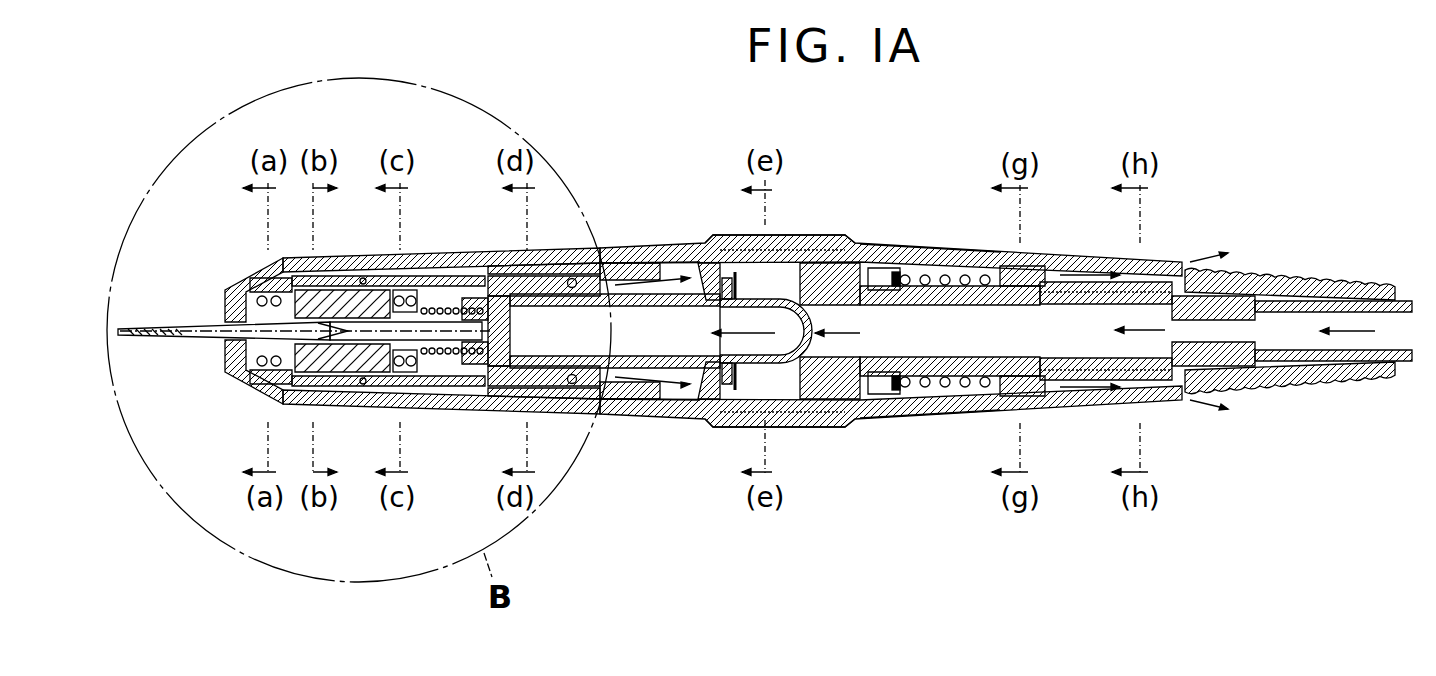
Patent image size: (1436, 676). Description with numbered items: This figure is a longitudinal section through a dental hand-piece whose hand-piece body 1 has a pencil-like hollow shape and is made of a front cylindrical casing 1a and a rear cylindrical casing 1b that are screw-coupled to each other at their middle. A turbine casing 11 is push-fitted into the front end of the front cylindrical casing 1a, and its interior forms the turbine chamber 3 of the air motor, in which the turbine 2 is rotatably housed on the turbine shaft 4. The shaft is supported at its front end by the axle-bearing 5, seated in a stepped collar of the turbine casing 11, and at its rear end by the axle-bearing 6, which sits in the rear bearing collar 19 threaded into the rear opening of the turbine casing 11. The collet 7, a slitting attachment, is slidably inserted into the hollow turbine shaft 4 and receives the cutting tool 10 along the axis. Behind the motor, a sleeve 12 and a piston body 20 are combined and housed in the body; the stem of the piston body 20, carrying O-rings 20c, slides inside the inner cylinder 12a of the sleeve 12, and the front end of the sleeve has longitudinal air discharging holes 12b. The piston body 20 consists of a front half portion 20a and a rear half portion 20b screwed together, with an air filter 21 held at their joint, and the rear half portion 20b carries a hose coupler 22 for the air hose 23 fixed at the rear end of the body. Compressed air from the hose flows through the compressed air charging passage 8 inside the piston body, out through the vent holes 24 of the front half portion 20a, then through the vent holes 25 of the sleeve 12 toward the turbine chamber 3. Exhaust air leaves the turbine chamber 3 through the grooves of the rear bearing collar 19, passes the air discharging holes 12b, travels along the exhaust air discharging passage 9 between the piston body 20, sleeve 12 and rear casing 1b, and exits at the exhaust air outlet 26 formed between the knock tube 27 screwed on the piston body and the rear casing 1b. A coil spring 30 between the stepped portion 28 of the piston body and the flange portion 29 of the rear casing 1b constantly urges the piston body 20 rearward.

The hand-piece body 1 is at (790, 233).
The front cylindrical casing 1a is at (667, 248).
The rear cylindrical casing 1b is at (888, 246).
The turbine 2 is at (340, 372).
The turbine chamber 3 is at (380, 265).
The turbine shaft 4 is at (270, 392).
The axle-bearing 5 is at (268, 380).
The axle-bearing 6 is at (407, 395).
The collet 7 is at (308, 268).
The compressed air charging passage 8 is at (650, 344).
The exhaust air discharging passage 9 is at (1022, 273).
The cutting tool 10 is at (160, 323).
The turbine casing 11 is at (345, 275).
The sleeve 12 is at (590, 398).
The inner cylinder of the sleeve 12a is at (596, 268).
The air discharging holes 12b is at (580, 270).
The rear bearing collar 19 is at (455, 300).
The piston body 20 is at (650, 400).
The front half portion of the piston body 20a is at (697, 247).
The rear half portion of the piston body 20b is at (952, 262).
The O-rings 20c is at (505, 268).
The air filter 21 is at (818, 240).
The hose coupler 22 is at (1257, 270).
The air hose 23 is at (1402, 298).
The vent holes 24 is at (470, 390).
The vent holes 25 is at (566, 278).
The exhaust air outlet 26 is at (1183, 258).
The knock tube 27 is at (1308, 372).
The stepped portion 28 is at (992, 404).
The flange portion 29 is at (906, 402).
The coil spring 30 is at (946, 402).